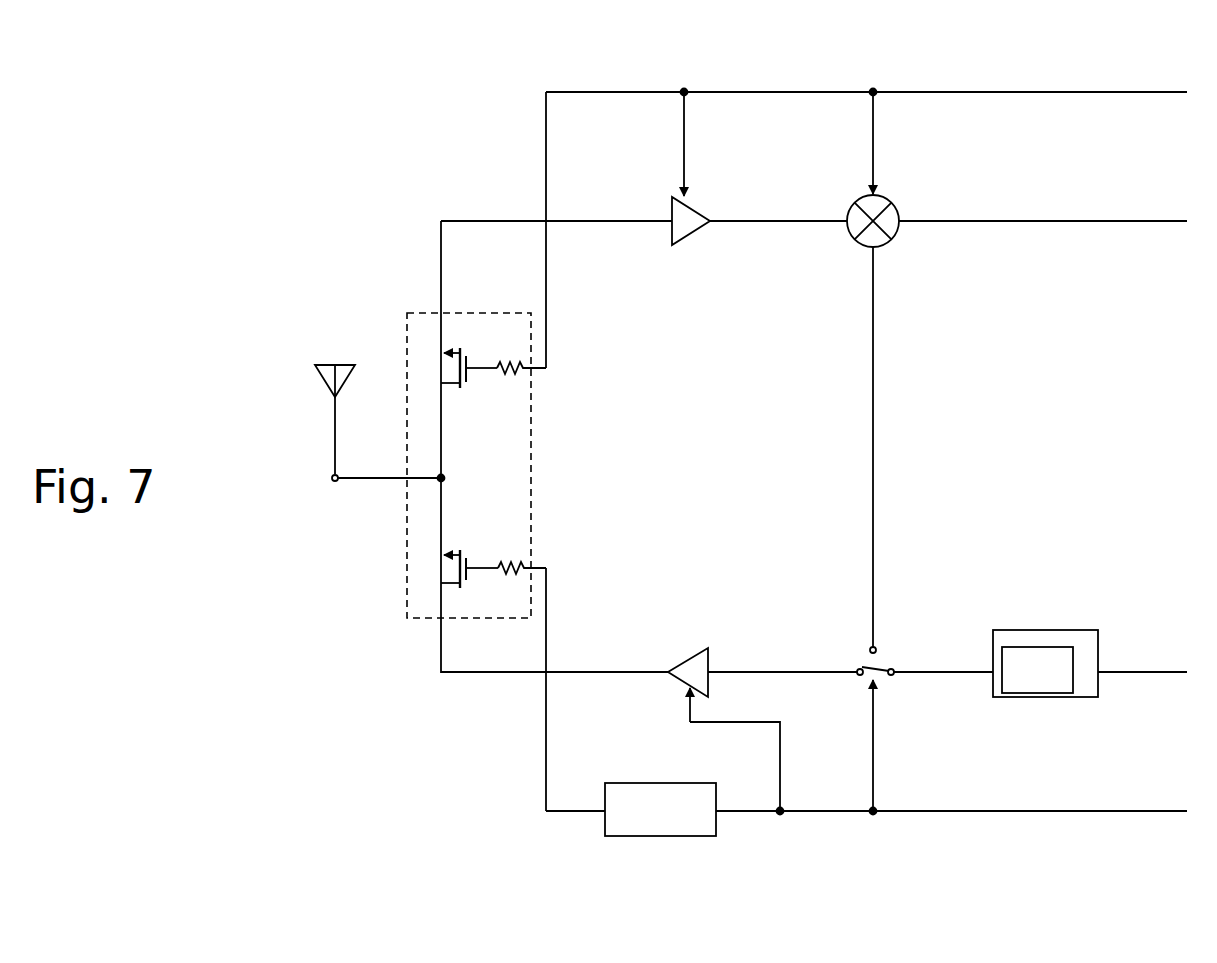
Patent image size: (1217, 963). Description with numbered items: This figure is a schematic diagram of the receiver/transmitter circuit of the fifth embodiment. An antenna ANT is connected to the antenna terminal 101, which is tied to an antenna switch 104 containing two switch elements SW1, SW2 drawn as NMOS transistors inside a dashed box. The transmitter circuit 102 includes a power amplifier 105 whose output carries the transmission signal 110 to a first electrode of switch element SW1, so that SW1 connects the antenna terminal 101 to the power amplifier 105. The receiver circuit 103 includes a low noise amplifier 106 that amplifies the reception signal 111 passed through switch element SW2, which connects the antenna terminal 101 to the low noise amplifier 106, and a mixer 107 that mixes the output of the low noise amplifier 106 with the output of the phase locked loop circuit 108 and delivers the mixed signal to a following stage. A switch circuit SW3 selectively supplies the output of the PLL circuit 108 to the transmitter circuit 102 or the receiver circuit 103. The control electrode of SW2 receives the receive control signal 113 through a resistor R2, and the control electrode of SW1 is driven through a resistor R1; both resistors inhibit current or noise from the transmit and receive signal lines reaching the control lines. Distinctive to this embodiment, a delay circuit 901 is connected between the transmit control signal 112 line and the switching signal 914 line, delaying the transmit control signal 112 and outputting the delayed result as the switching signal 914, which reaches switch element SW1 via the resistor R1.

The antenna terminal 101 is at (335, 484).
The transmitter circuit 102 is at (700, 614).
The receiver circuit 103 is at (726, 310).
The antenna switch 104 is at (405, 600).
The power amplifier 105 is at (712, 657).
The low noise amplifier 106 is at (705, 207).
The mixer 107 is at (900, 202).
The phase locked loop circuit 108 is at (1007, 630).
The transmission signal 110 is at (462, 675).
The reception signal 111 is at (470, 218).
The transmit control signal 112 is at (950, 813).
The receive control signal 113 is at (1020, 90).
The delay circuit 901 is at (1028, 697).
The switching signal 914 is at (562, 813).
The antenna ANT is at (328, 362).
The switch element SW1 is at (472, 555).
The switch element SW2 is at (470, 383).
The switch circuit SW3 is at (885, 650).
The resistor R1 is at (520, 562).
The resistor R2 is at (518, 372).